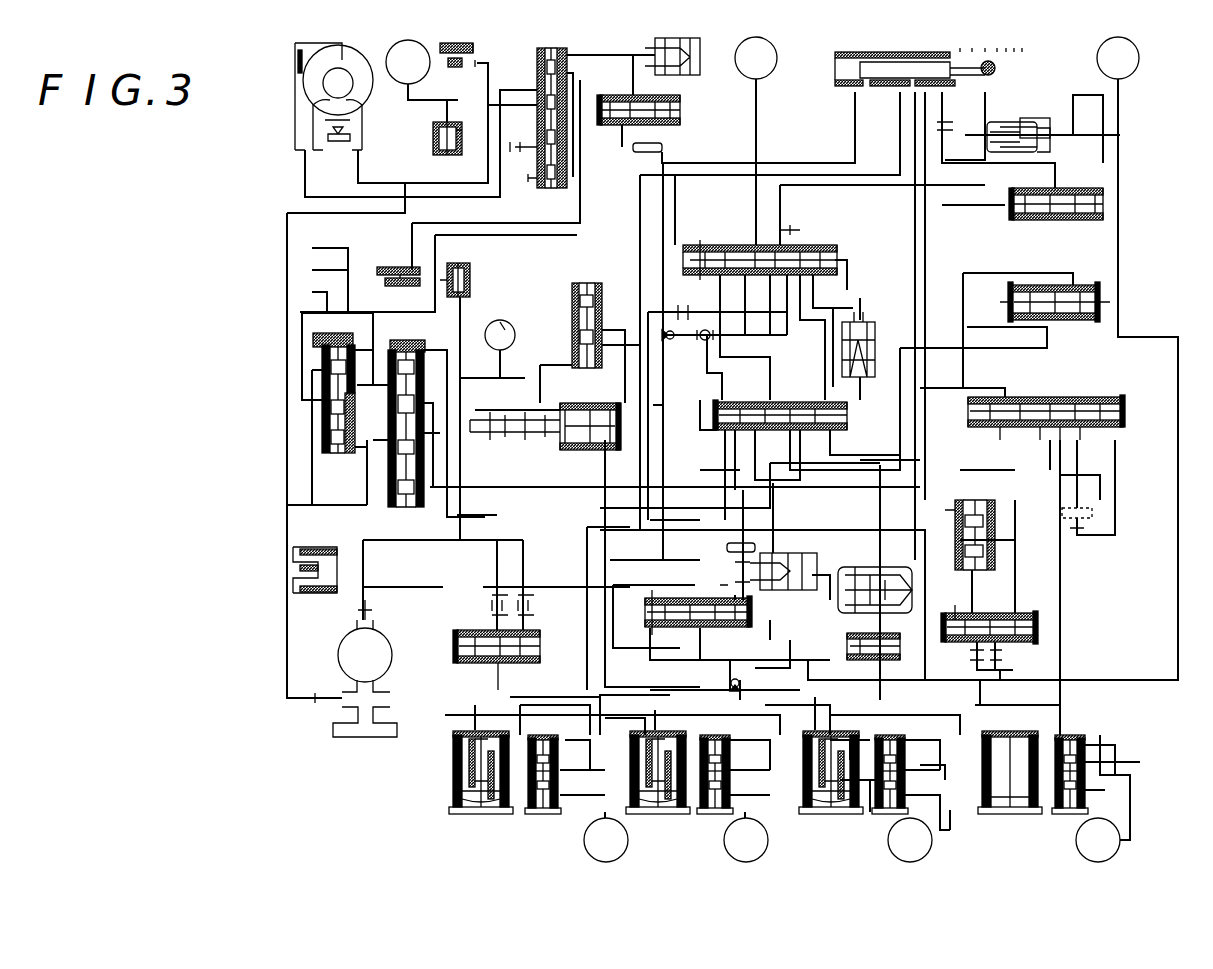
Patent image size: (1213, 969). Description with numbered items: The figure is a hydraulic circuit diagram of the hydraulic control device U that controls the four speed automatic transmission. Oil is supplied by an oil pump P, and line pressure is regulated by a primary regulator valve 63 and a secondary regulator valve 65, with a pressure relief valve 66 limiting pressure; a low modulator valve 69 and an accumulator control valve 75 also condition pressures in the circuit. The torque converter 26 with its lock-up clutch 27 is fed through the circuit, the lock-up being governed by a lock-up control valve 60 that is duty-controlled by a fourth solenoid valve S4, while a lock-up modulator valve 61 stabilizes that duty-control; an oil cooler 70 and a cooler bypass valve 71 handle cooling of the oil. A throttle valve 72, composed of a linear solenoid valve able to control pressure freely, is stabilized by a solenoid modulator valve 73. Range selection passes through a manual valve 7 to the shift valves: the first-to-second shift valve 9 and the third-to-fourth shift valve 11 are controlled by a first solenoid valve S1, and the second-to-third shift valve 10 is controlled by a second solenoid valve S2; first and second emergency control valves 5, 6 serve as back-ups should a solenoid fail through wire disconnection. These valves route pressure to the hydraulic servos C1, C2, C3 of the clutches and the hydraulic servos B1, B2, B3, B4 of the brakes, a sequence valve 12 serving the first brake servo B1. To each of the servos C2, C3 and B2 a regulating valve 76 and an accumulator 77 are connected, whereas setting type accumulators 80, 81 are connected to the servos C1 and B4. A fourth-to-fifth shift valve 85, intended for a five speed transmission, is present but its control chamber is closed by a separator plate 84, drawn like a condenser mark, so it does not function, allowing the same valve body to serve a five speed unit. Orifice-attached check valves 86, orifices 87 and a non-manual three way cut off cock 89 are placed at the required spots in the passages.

The torque converter 26 is at (366, 103).
The lock-up clutch 27 is at (297, 62).
The oil cooler 70 is at (416, 54).
The cooler bypass valve 71 is at (444, 156).
The lock-up control valve 60 is at (534, 52).
The lock-up modulator valve 61 is at (686, 106).
The fourth solenoid valve S4 is at (700, 66).
The hydraulic servo for the third brake B3 is at (756, 58).
The manual valve 7 is at (890, 52).
The orifice 87 is at (945, 112).
The setting type accumulator 80 is at (1032, 120).
The hydraulic servo for the first clutch C1 is at (1118, 58).
The second emergency control valve 6 is at (1112, 188).
The 1-2 shift valve 9 is at (712, 244).
The separator plate 84 is at (788, 236).
The first emergency control valve 5 is at (1084, 284).
The 4-5 shift valve 85 is at (1126, 397).
The secondary regulator valve 65 is at (312, 340).
The primary regulator valve 63 is at (420, 346).
The pressure relief valve 66 is at (476, 276).
The solenoid modulator valve 73 is at (607, 300).
The throttle valve 72 is at (592, 406).
The three way cut off cock 89 is at (708, 327).
The orifice-attached check valve 86 is at (675, 360).
The 3-4 shift valve 11 is at (748, 397).
The first solenoid valve S1 is at (858, 384).
The low modulator valve 69 is at (996, 500).
The accumulator control valve 75 is at (540, 630).
The 2-3 shift valve 10 is at (640, 630).
The second solenoid valve S2 is at (788, 546).
The hydraulic servo for the fourth brake B4 is at (902, 578).
The setting type accumulator 81 is at (884, 638).
The sequence valve 12 is at (965, 610).
The accumulator 77 is at (483, 820).
The regulating valve 76 is at (546, 818).
The hydraulic servo for the second brake B2 is at (606, 840).
The hydraulic servo for the second clutch C2 is at (746, 840).
The hydraulic servo for the third clutch C3 is at (910, 840).
The hydraulic servo for the first brake B1 is at (1098, 840).
The oil pump P is at (342, 640).
The hydraulic circuit U is at (246, 192).